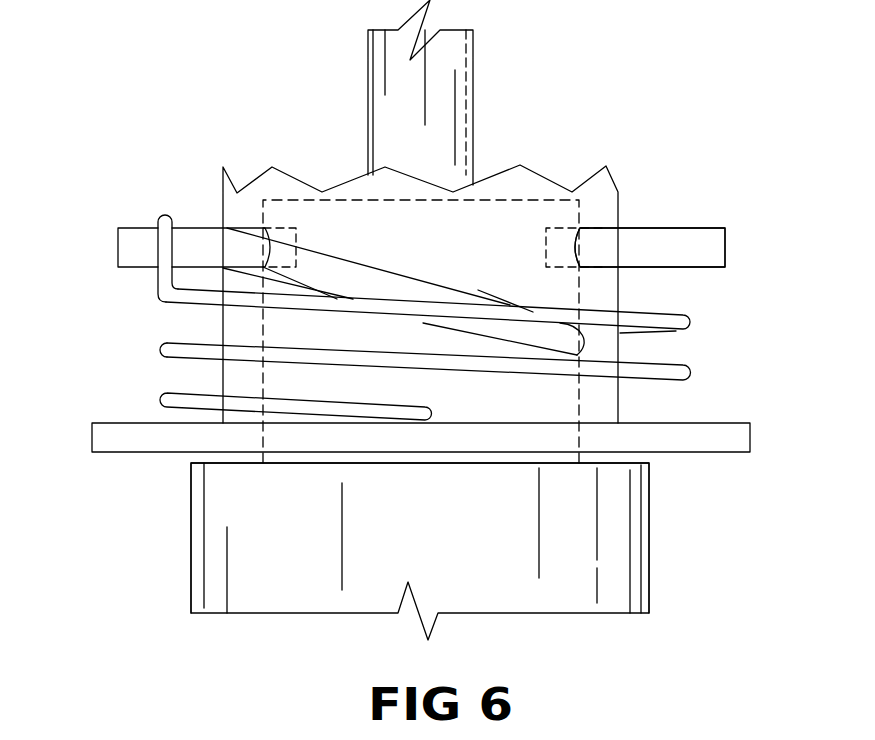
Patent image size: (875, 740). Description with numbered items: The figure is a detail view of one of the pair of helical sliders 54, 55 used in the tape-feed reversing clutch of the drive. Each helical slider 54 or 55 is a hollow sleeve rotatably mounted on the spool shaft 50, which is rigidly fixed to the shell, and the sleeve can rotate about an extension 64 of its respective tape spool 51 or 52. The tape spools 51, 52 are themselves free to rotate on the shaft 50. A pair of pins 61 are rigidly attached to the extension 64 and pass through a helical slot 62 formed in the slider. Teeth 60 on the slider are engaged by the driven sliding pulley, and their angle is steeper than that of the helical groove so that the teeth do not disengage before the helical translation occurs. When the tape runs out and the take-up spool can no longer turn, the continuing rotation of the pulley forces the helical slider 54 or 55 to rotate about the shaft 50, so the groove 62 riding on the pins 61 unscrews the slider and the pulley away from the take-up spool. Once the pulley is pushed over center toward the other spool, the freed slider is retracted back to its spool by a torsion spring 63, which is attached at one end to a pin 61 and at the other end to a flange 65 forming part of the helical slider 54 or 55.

The spool shaft 50 is at (473, 90).
The tape spool 51 is at (592, 613).
The tape spool 52 is at (420, 538).
The helical slider 54 is at (618, 215).
The helical slider 55 is at (650, 247).
The teeth 60 is at (520, 165).
The pins 61 is at (783, 314).
The helical slot 62 is at (380, 267).
The torsion spring 63 is at (158, 348).
The extension 64 is at (285, 200).
The flange 65 is at (137, 452).